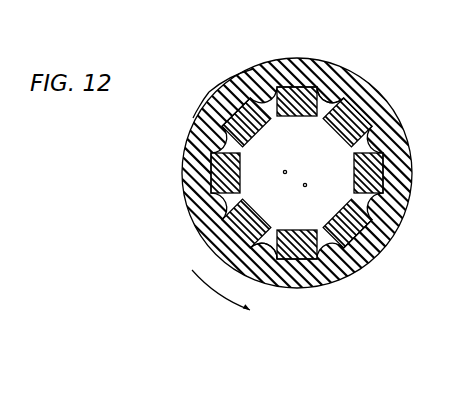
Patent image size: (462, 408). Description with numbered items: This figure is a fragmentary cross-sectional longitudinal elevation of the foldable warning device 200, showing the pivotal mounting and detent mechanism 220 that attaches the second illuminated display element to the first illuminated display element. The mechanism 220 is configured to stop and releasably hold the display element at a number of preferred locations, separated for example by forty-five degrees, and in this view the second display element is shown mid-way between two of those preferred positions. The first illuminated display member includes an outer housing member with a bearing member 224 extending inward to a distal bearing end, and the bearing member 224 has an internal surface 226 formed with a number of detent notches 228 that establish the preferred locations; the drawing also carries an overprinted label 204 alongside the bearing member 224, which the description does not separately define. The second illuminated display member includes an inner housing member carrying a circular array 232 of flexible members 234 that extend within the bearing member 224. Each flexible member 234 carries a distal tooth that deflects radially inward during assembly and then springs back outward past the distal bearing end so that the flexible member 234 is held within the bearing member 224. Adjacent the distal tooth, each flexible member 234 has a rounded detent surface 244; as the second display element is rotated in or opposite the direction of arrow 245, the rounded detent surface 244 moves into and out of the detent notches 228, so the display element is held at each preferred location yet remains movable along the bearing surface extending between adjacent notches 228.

The foldable warning device 200 is at (185, 104).
The pivotal mounting and detent mechanism 220 is at (184, 124).
The bearing member 224 is at (218, 79).
The outer surface 204 is at (221, 86).
The rounded detent surface 244 is at (240, 84).
The internal surface 226 is at (330, 89).
The detent notches 228 is at (262, 261).
The circular array 232 is at (327, 181).
The flexible members 234 is at (357, 173).
The direction of arrow 245 is at (205, 288).